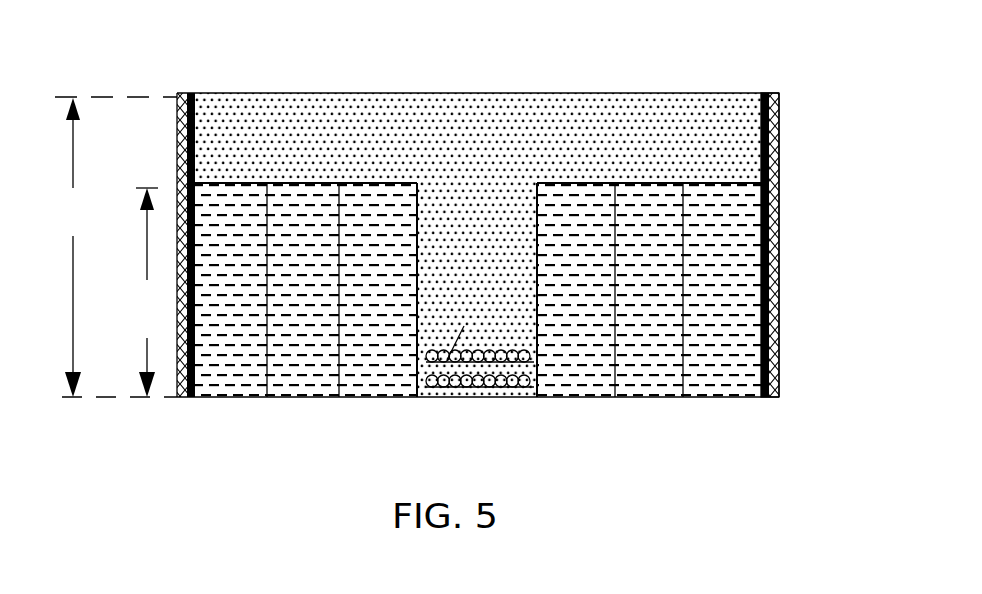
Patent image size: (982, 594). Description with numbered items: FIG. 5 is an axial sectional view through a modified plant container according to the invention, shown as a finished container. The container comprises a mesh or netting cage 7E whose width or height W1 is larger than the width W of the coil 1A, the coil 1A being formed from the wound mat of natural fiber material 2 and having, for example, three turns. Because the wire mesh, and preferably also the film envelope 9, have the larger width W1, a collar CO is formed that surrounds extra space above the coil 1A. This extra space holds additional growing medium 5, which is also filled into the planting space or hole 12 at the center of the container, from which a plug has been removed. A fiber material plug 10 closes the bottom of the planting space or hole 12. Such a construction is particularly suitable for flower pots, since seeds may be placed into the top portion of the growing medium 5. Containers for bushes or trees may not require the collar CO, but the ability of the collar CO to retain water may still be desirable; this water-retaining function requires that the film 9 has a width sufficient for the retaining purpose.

The growing medium 5 is at (318, 110).
The film envelope 9 is at (763, 93).
The collar CO is at (779, 180).
The mesh or netting cage 7E is at (783, 378).
The natural fiber material 2 is at (268, 368).
The planting space or hole 12 is at (418, 398).
The fiber material plug 10 is at (507, 398).
The coil 1A is at (650, 375).
The width or height of the cage W1 is at (112, 247).
The width of the coil W is at (147, 292).